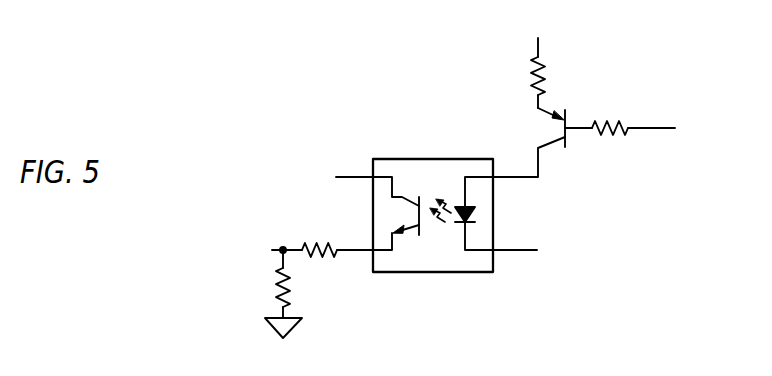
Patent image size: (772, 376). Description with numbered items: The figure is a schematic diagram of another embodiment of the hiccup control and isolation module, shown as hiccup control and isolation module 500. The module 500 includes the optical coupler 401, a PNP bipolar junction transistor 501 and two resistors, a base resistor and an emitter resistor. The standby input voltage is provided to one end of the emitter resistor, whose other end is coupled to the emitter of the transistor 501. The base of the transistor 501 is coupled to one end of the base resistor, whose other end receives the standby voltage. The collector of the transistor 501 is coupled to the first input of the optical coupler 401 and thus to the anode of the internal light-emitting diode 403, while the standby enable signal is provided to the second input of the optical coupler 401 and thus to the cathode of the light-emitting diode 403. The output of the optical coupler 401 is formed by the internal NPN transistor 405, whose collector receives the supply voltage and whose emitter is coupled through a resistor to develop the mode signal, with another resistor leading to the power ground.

The hiccup control and isolation module 500 is at (378, 63).
The optical coupler 401 is at (435, 273).
The light-emitting diode 403 is at (460, 206).
The NPN bipolar junction transistor 405 is at (402, 197).
The PNP BJT 501 is at (568, 147).